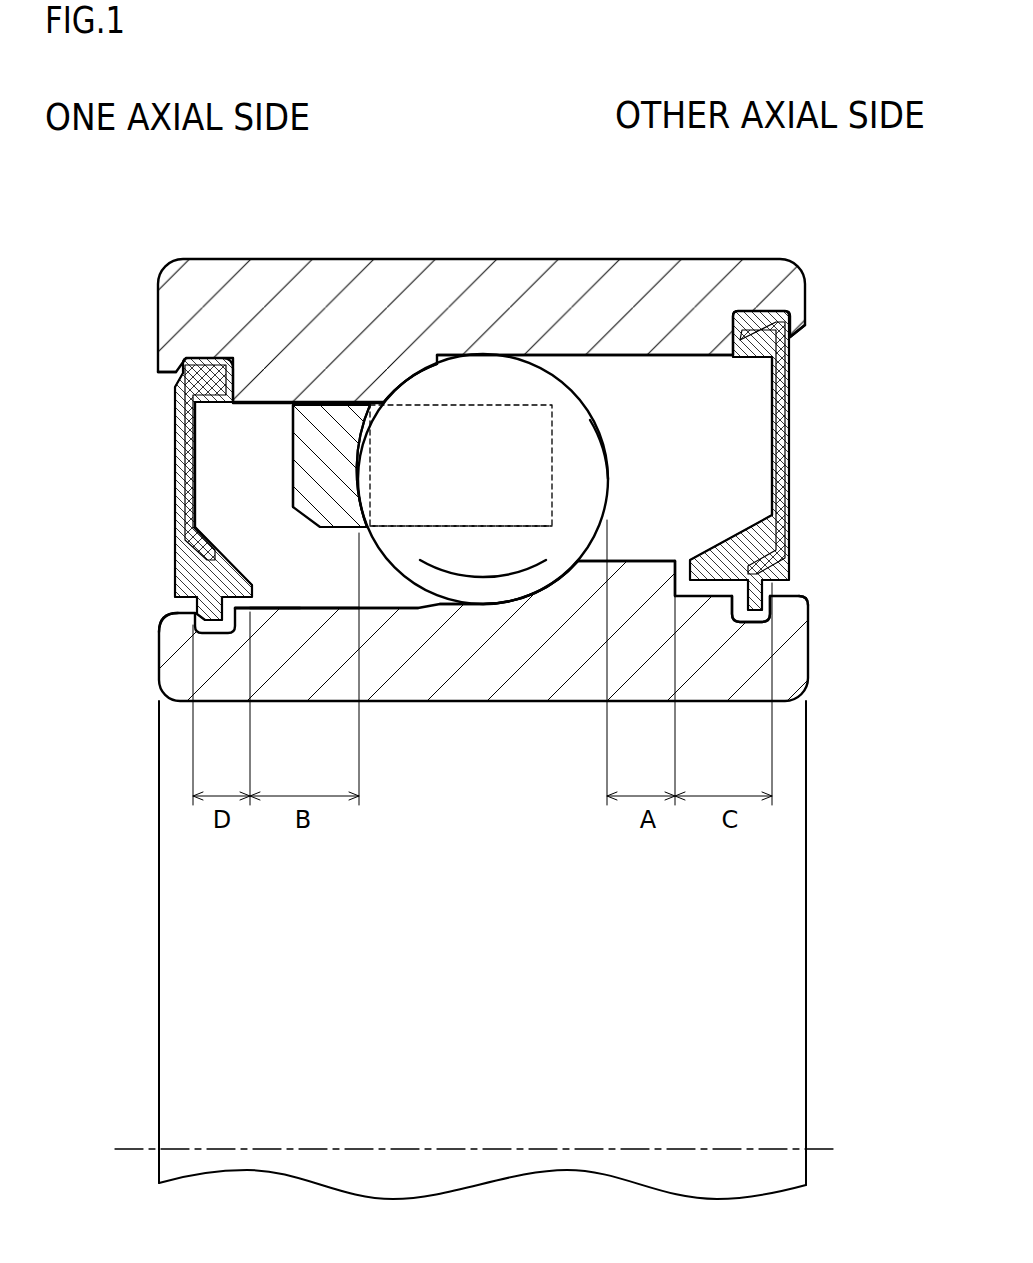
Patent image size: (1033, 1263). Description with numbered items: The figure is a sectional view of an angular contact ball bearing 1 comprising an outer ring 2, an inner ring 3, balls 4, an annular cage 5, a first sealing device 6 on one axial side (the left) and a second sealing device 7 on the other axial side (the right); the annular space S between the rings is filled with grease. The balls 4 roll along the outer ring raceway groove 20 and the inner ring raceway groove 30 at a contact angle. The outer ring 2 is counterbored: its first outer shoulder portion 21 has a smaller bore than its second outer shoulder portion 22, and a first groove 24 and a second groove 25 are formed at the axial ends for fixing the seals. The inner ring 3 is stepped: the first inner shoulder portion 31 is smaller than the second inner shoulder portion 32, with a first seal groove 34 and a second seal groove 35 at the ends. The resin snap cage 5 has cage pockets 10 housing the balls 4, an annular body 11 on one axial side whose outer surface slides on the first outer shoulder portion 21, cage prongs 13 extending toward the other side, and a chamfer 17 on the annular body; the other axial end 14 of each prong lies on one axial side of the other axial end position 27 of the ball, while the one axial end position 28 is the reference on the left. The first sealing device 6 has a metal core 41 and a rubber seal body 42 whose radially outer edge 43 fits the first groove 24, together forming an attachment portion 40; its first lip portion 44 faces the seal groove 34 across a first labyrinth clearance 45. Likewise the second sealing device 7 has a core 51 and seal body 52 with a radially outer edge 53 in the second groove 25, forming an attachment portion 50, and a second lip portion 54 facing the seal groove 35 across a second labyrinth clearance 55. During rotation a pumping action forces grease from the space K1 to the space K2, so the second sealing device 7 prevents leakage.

The angular contact ball bearing 1 is at (583, 258).
The outer ring 2 is at (469, 308).
The inner ring 3 is at (420, 665).
The ball 4 is at (497, 393).
The cage 5 is at (322, 400).
The first sealing device 6 is at (155, 405).
The second sealing device 7 is at (799, 377).
The cage pocket 10 is at (447, 530).
The annular body 11 is at (300, 458).
The cage prong 13 is at (483, 505).
The other axial end of cage prong 14 is at (554, 438).
The chamfer 17 is at (345, 640).
The outer ring raceway groove 20 is at (428, 372).
The first outer shoulder portion 21 is at (279, 400).
The second outer shoulder portion 22 is at (678, 343).
The first groove 24 is at (175, 378).
The second groove 25 is at (806, 328).
The other axial end position of ball 27 is at (609, 478).
The one axial end position of ball 28 is at (300, 473).
The inner ring raceway groove 30 is at (535, 578).
The first inner shoulder portion 31 is at (300, 618).
The second inner shoulder portion 32 is at (635, 570).
The first seal groove 34 is at (175, 613).
The second seal groove 35 is at (806, 596).
The attachment portion 40 is at (166, 406).
The core 41 is at (185, 420).
The seal body 42 is at (182, 566).
The radially outer edge 43 is at (222, 358).
The first lip portion 44 is at (232, 584).
The first labyrinth clearance 45 is at (256, 602).
The attachment portion 50 is at (796, 344).
The core 51 is at (780, 400).
The seal body 52 is at (781, 553).
The radially outer edge 53 is at (752, 328).
The second lip portion 54 is at (708, 570).
The second labyrinth clearance 55 is at (681, 560).
The space on one axial side K1 is at (220, 480).
The space on other axial side K2 is at (695, 420).
The annular space S is at (226, 493).